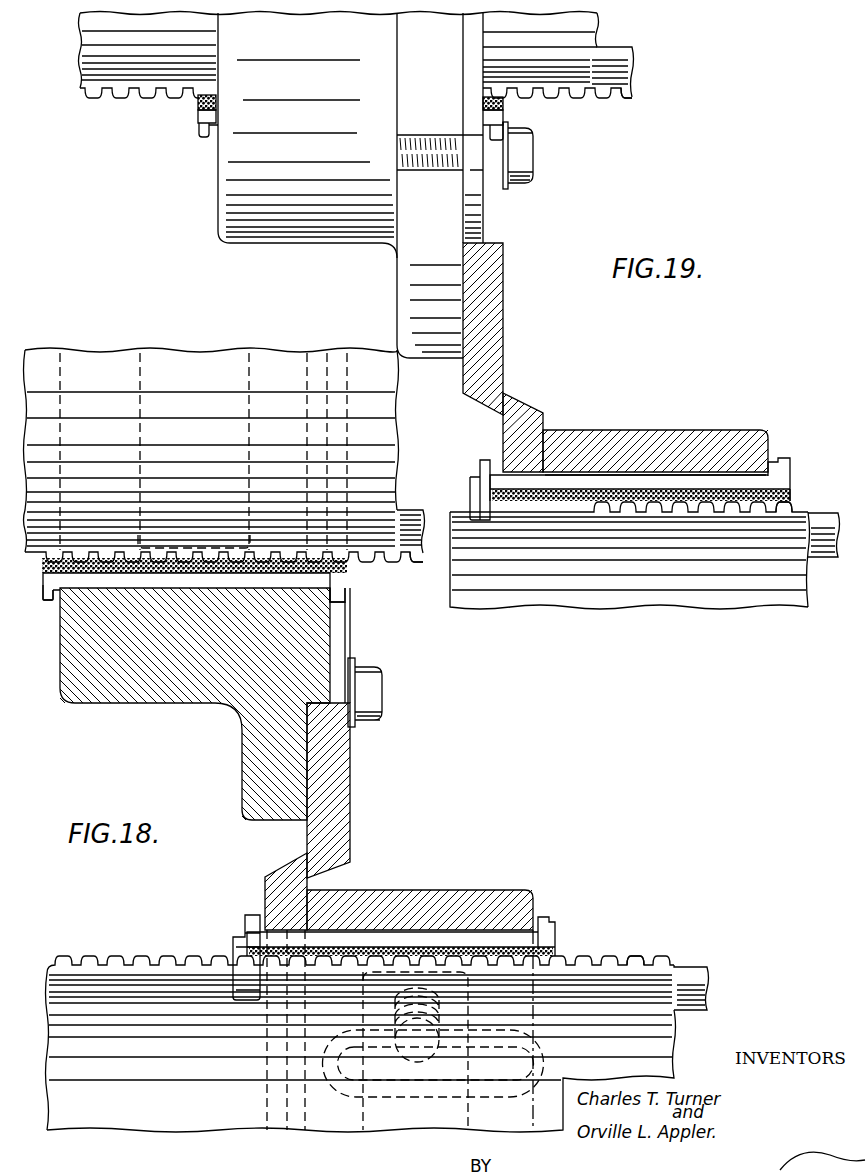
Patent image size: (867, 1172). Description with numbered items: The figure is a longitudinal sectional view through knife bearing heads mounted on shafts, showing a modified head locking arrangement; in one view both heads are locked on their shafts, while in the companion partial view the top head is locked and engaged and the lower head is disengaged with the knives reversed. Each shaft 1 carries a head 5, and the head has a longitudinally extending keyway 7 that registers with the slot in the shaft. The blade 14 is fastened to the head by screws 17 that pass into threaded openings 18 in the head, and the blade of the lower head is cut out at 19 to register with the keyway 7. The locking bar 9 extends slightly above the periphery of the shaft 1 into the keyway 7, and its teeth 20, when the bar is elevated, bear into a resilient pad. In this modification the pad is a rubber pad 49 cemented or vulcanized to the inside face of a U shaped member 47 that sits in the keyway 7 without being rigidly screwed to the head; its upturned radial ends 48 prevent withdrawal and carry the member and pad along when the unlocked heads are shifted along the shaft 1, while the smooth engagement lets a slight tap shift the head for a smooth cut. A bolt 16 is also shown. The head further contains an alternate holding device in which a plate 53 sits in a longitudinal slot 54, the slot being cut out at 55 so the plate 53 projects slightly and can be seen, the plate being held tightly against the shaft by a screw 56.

In FIG. 19, the shaft 1 is at (98, 80).
In FIG. 18, the shaft 1 is at (195, 365).
In FIG. 19, the head 5 is at (218, 197).
In FIG. 18, the head 5 is at (125, 703).
In FIG. 19, the keyway 7 is at (657, 473).
In FIG. 19, the locking bar 9 is at (626, 62).
In FIG. 18, the locking bar 9 is at (404, 515).
In FIG. 19, the blade 14 is at (503, 287).
In FIG. 18, the blade 14 is at (352, 765).
In FIG. 19, the bolt 16 is at (483, 238).
In FIG. 18, the bolt 16 is at (315, 698).
In FIG. 19, the screws 17 is at (533, 155).
In FIG. 18, the screws 17 is at (382, 700).
In FIG. 19, the threaded openings 18 is at (447, 172).
In FIG. 19, the cut out 19 is at (518, 470).
In FIG. 18, the cut out 19 is at (287, 923).
In FIG. 19, the teeth 20 is at (622, 97).
In FIG. 18, the teeth 20 is at (412, 562).
In FIG. 19, the U shaped member 47 is at (210, 113).
In FIG. 18, the U shaped member 47 is at (92, 590).
In FIG. 19, the upturned ends 48 is at (205, 138).
In FIG. 18, the upturned ends 48 is at (48, 600).
In FIG. 19, the rubber pad 49 is at (200, 100).
In FIG. 18, the rubber pad 49 is at (105, 567).
In FIG. 18, the plate 53 is at (543, 1070).
In FIG. 18, the slot 54 is at (340, 1093).
In FIG. 18, the cut out 55 is at (533, 1093).
In FIG. 18, the screw 56 is at (397, 1040).